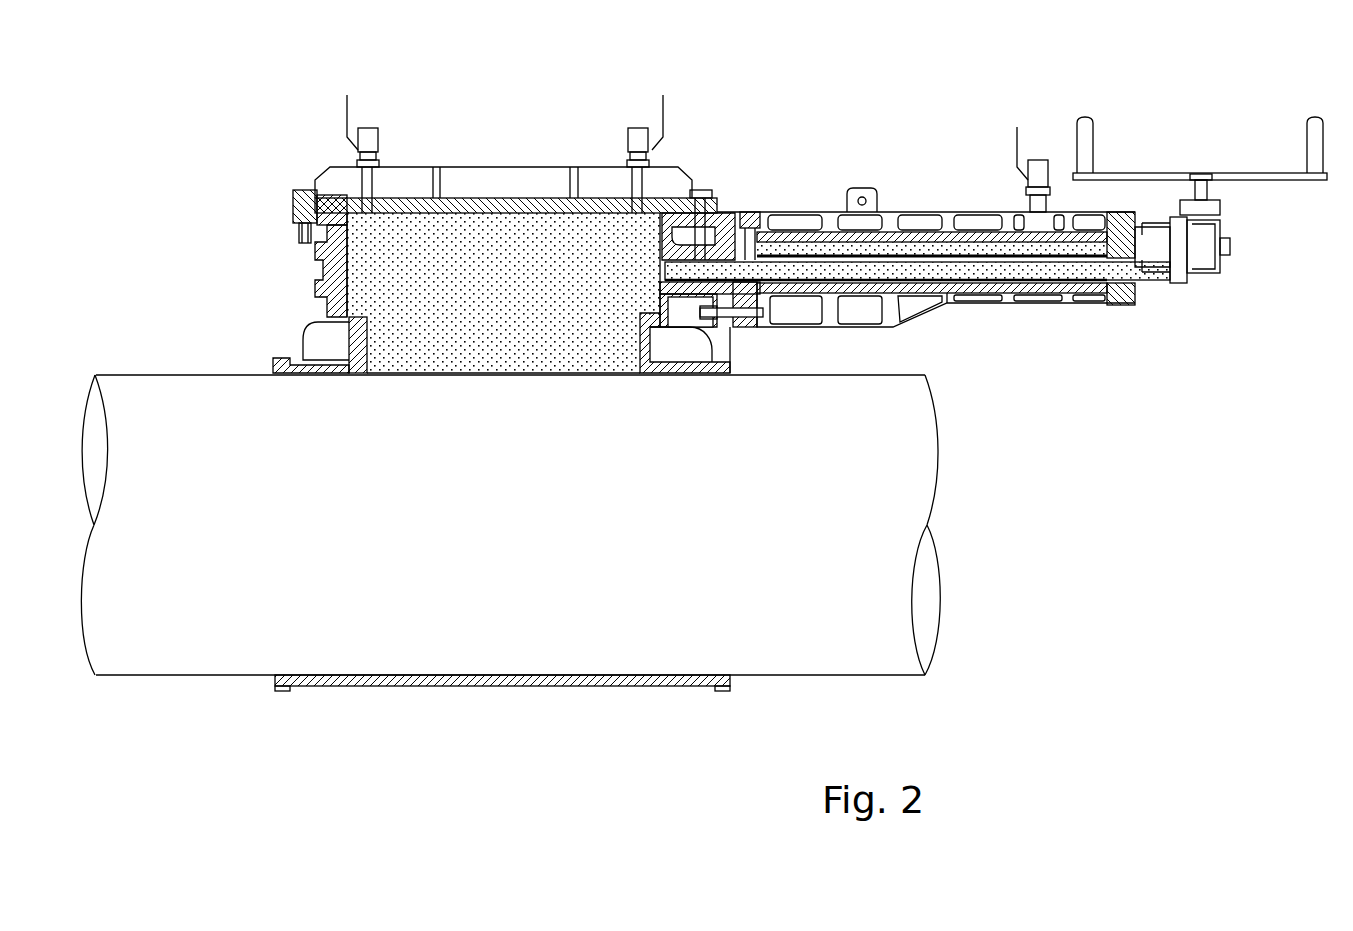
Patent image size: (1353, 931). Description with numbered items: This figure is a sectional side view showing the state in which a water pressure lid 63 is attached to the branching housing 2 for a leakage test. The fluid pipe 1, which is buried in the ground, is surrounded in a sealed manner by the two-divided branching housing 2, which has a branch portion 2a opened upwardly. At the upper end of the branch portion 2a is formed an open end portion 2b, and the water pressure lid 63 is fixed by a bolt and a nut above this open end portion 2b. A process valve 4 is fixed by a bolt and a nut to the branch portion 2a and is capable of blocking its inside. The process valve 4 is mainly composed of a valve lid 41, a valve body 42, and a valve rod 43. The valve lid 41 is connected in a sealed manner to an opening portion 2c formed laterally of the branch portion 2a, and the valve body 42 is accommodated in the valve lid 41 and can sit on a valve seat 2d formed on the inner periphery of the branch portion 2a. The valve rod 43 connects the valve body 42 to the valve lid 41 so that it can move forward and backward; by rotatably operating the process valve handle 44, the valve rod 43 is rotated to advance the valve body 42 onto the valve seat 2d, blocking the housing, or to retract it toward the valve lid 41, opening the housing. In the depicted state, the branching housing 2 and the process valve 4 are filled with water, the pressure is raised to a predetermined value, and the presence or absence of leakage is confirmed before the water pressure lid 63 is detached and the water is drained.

The fluid pipe 1 is at (913, 460).
The branching housing 2 is at (486, 470).
The branch portion 2a is at (347, 343).
The open end portion 2b is at (295, 205).
The opening portion 2c is at (750, 212).
The valve seat 2d is at (323, 260).
The process valve 4 is at (996, 216).
The valve lid 41 is at (1047, 297).
The valve body 42 is at (977, 275).
The valve rod 43 is at (927, 243).
The process valve handle 44 is at (1085, 117).
The water pressure lid 63 is at (470, 205).